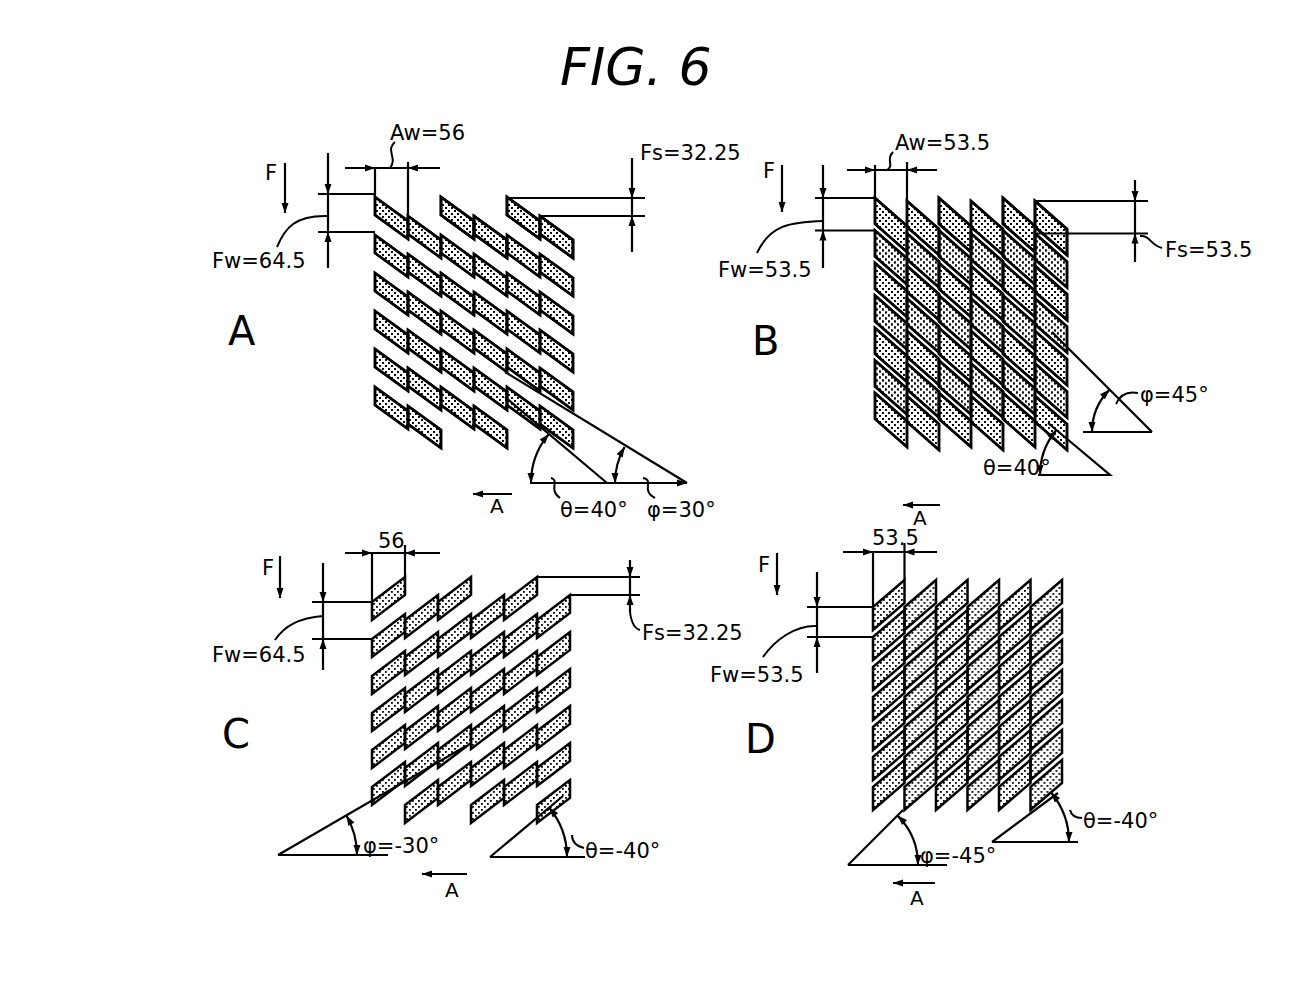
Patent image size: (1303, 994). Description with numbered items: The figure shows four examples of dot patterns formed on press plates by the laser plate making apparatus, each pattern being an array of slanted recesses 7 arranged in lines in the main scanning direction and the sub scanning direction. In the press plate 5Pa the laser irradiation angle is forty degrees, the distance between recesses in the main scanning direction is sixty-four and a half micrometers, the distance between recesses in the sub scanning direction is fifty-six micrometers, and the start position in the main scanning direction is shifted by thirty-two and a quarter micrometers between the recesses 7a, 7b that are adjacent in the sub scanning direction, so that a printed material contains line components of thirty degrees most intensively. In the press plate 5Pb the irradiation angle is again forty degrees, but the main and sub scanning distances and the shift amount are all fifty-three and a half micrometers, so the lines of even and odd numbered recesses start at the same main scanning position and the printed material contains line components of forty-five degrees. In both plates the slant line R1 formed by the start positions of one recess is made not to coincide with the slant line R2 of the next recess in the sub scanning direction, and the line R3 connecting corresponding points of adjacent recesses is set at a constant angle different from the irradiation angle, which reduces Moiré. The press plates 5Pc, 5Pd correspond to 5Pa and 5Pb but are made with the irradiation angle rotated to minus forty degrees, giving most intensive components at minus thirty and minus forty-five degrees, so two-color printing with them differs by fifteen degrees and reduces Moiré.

The recess 7 is at (441, 207).
The recess 7a is at (541, 243).
The recess 7b is at (571, 237).
The press plate 5Pa is at (538, 184).
The press plate 5Pb is at (1058, 188).
The press plate 5Pc is at (494, 582).
The press plate 5Pd is at (999, 582).
The slant line R1 is at (432, 190).
The slant line R2 is at (467, 204).
The line R3 is at (320, 830).